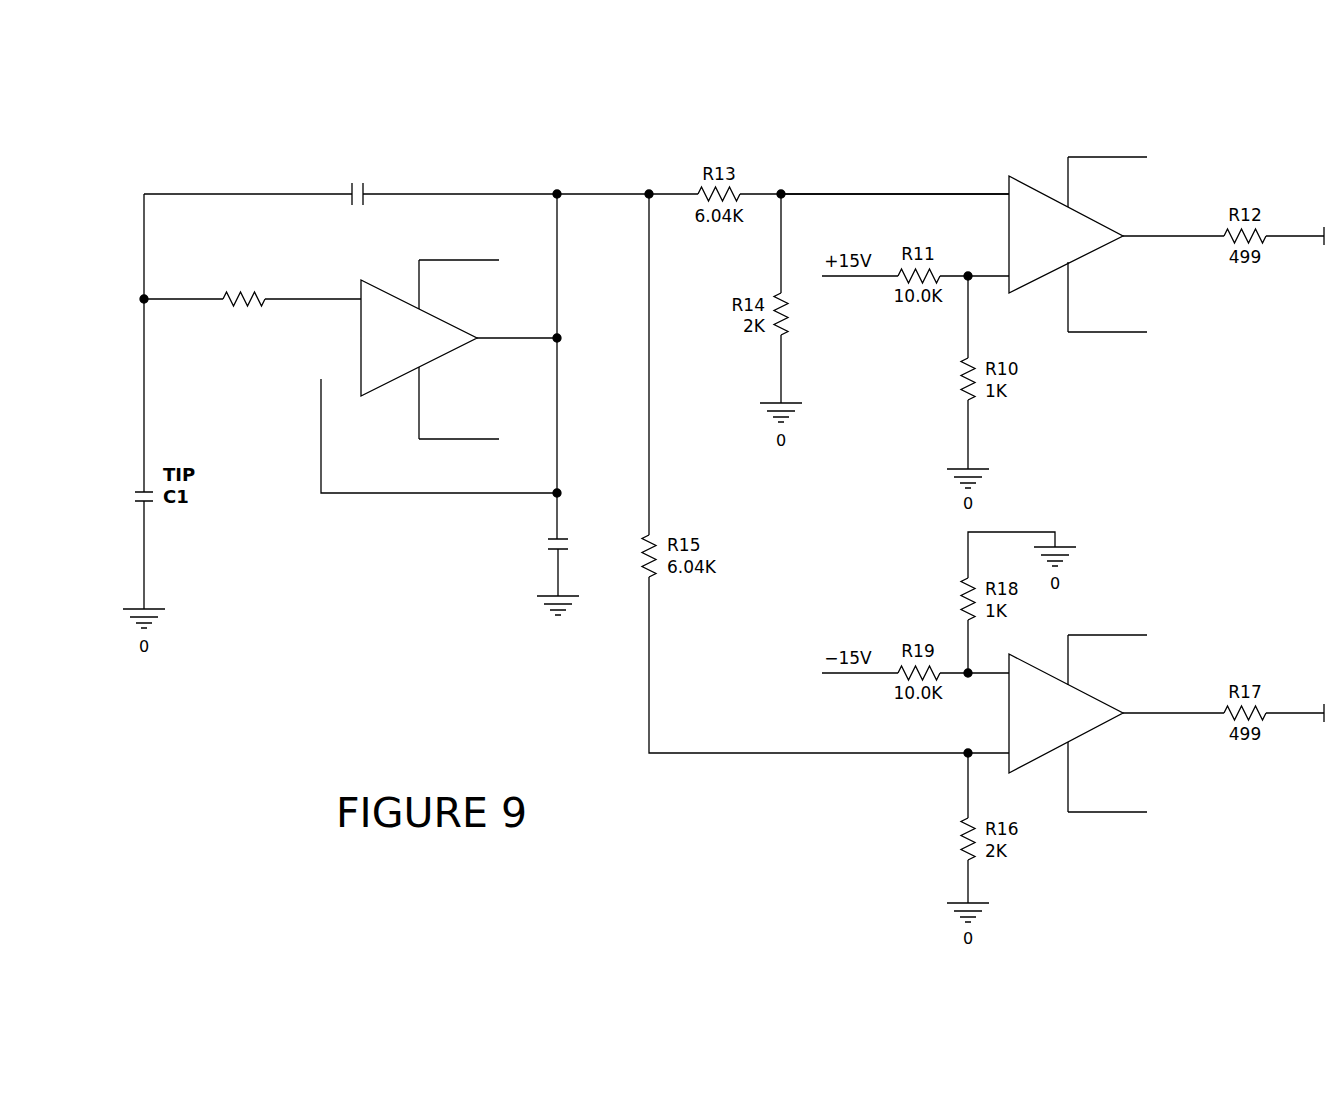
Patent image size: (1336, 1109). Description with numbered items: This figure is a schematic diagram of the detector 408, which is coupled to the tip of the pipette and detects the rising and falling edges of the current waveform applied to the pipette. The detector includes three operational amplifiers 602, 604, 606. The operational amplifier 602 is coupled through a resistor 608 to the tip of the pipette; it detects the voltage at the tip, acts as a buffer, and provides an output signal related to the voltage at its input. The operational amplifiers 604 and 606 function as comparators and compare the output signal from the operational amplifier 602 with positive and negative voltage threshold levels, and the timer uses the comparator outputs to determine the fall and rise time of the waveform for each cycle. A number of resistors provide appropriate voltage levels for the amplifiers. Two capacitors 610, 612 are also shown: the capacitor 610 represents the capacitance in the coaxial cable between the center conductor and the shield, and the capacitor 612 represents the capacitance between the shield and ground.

The detector 408 is at (874, 166).
The operational amplifier 602 is at (438, 317).
The operational amplifier 604 is at (1085, 212).
The operational amplifier 606 is at (1085, 689).
The resistor 608 is at (263, 300).
The capacitor 610 is at (370, 183).
The capacitor 612 is at (573, 543).